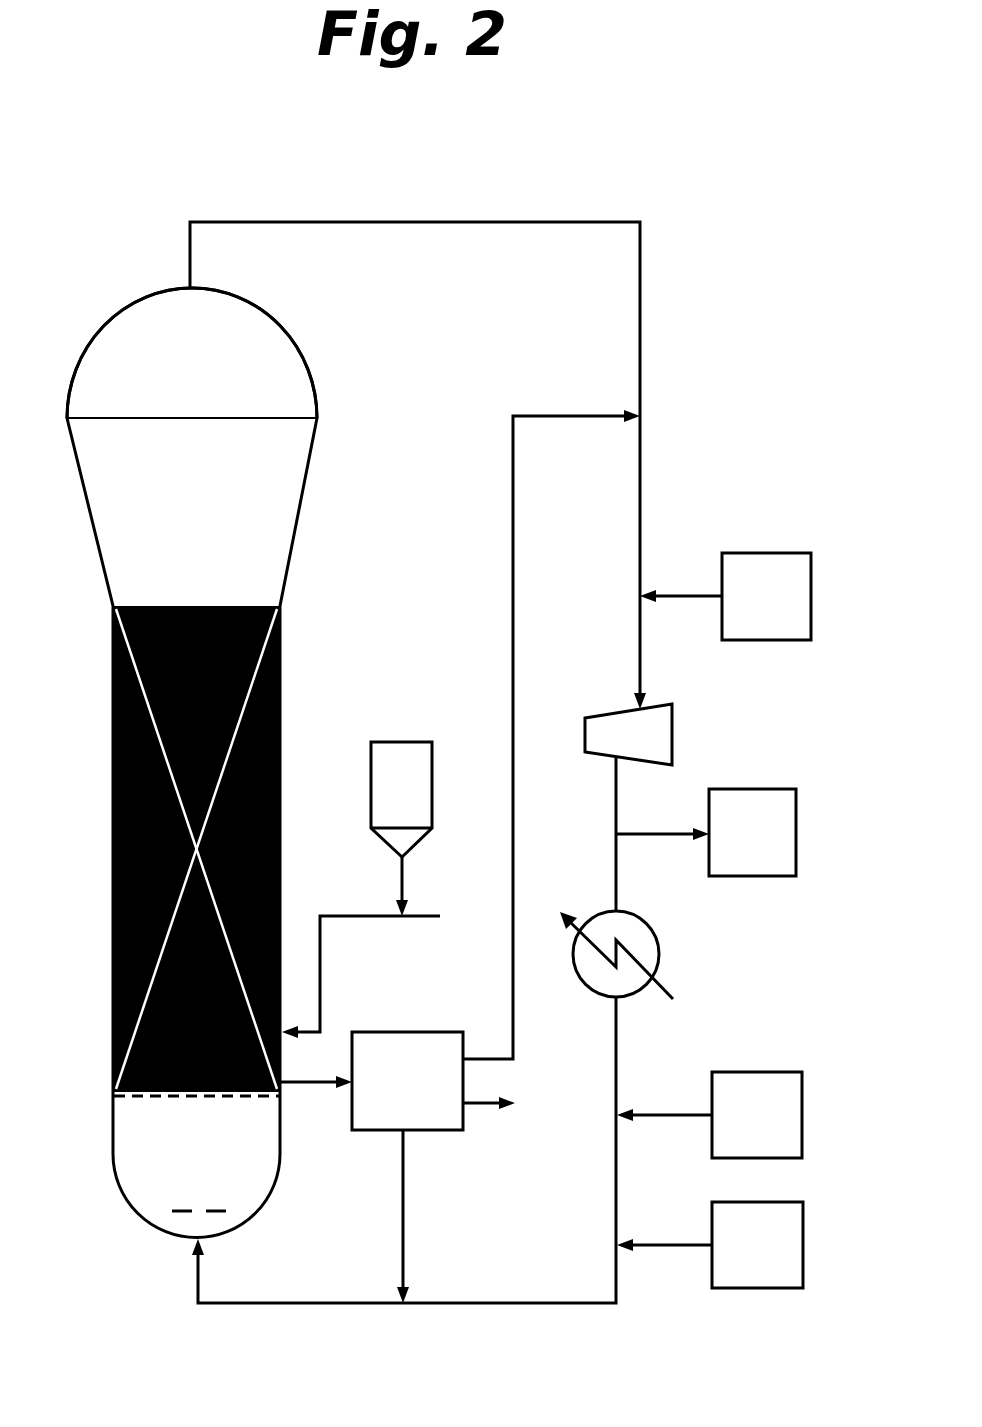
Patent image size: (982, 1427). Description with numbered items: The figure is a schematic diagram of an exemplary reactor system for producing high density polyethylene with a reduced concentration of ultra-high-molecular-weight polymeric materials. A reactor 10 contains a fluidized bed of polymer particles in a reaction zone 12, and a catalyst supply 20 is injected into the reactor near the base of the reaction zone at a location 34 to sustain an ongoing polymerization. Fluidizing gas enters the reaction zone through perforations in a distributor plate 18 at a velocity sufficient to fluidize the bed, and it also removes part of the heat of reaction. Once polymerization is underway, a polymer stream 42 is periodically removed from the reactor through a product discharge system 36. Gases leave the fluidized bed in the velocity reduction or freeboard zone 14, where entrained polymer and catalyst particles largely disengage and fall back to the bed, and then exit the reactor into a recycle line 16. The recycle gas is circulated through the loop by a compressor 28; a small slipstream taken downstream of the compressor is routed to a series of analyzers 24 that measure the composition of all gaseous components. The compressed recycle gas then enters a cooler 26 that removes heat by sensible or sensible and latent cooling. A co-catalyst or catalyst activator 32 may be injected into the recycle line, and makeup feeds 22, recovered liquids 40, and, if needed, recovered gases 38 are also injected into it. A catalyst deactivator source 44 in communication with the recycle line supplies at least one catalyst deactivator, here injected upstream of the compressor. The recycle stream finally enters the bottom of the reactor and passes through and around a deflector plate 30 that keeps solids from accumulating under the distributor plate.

The reactor 10 is at (281, 669).
The reaction zone 12 is at (196, 849).
The freeboard zone 14 is at (171, 386).
The recycle line 16 is at (491, 223).
The distributor plate 18 is at (249, 1098).
The catalyst supply 20 is at (381, 801).
The makeup feeds 22 is at (737, 1261).
The analyzers 24 is at (706, 832).
The cooler 26 is at (655, 932).
The compressor 28 is at (628, 734).
The deflector plate 30 is at (182, 1215).
The co-catalyst or catalyst activator 32 is at (737, 1131).
The catalyst injection location 34 is at (284, 1020).
The product discharge system 36 is at (388, 1098).
The recovered gases 38 is at (636, 419).
The recovered liquids 40 is at (408, 1300).
The polymer stream 42 is at (513, 1103).
The catalyst deactivator source 44 is at (746, 612).